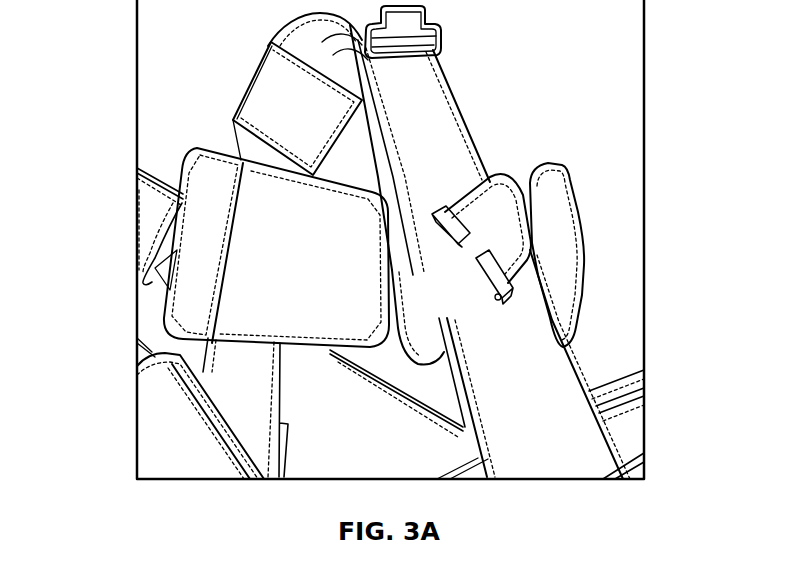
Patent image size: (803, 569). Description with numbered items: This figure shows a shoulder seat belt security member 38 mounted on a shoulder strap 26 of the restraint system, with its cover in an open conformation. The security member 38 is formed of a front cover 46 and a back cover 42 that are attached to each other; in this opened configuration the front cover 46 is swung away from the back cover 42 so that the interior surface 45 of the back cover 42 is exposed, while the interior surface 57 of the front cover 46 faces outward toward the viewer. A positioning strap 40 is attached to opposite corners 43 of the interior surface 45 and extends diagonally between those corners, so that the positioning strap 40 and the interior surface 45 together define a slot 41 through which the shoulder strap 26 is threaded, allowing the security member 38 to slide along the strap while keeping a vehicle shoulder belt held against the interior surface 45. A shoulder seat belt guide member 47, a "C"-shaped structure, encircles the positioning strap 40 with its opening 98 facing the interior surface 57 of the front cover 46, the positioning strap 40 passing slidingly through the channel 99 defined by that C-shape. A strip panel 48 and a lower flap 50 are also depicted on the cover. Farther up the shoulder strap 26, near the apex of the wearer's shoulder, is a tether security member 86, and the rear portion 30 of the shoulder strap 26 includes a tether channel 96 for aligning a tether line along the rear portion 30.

The shoulder strap 26 is at (153, 172).
The rear portion 30 is at (260, 405).
The shoulder seat belt security member 38 is at (578, 327).
The positioning strap 40 is at (463, 330).
The slot 41 is at (413, 239).
The back cover 42 is at (343, 207).
The opposite corners 43 is at (527, 168).
The interior surface 45 is at (402, 236).
The front cover 46 is at (573, 185).
The shoulder seat belt guide member 47 is at (443, 207).
The strip panel 48 is at (208, 172).
The lower flap 50 is at (160, 312).
The interior surface 57 is at (563, 260).
The tether security member 86 is at (432, 22).
The tether channel 96 is at (253, 68).
The opening 98 is at (476, 255).
The channel 99 is at (496, 302).